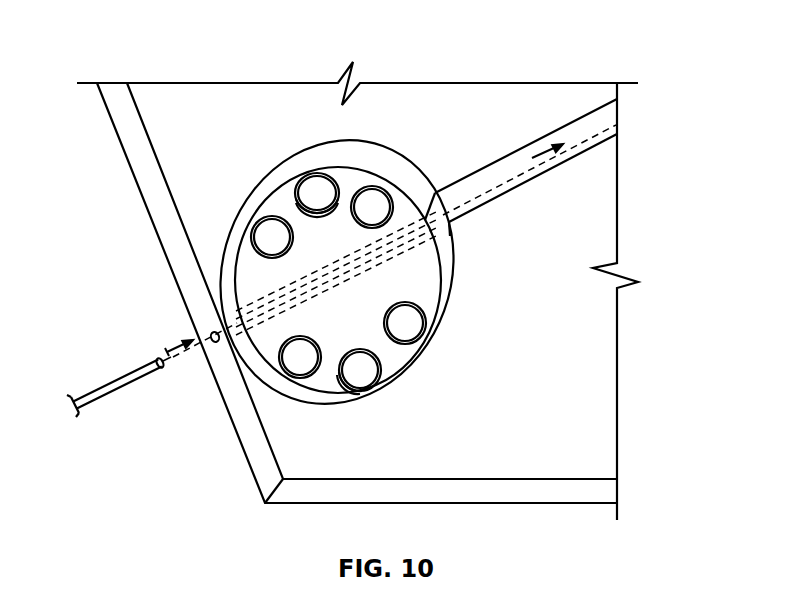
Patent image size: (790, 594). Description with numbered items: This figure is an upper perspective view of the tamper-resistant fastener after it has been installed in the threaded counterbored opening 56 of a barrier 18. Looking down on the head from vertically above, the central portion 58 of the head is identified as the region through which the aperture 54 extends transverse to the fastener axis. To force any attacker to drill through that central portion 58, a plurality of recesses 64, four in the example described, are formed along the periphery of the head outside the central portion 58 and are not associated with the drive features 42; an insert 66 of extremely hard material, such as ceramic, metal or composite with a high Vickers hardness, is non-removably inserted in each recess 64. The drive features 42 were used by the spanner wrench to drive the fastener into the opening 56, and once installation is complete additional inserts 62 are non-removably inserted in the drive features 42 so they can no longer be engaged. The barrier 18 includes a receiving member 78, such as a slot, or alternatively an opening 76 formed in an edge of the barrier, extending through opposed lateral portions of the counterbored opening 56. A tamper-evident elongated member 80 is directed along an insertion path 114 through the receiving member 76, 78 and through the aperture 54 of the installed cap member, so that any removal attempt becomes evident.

The barrier 18 is at (175, 82).
The drive feature 42 is at (327, 192).
The aperture 54 is at (397, 252).
The threaded counterbored opening 56 is at (400, 158).
The central portion 58 is at (250, 303).
The additional insert 62 is at (338, 185).
The recess 64 is at (427, 323).
The insert 66 is at (412, 345).
The opening 76 is at (211, 336).
The receiving member 78 is at (533, 178).
The tamper-evident elongated member 80 is at (113, 390).
The insertion path 114 is at (540, 155).